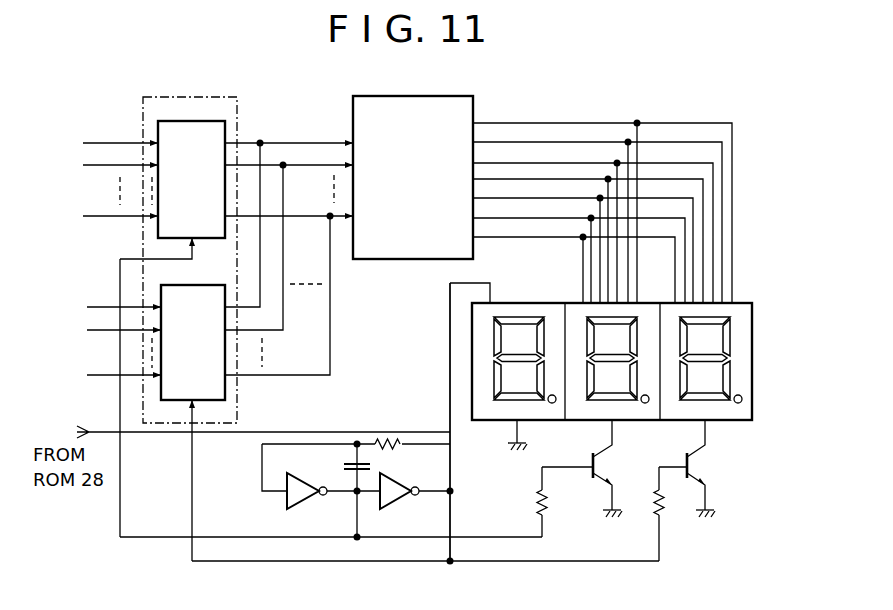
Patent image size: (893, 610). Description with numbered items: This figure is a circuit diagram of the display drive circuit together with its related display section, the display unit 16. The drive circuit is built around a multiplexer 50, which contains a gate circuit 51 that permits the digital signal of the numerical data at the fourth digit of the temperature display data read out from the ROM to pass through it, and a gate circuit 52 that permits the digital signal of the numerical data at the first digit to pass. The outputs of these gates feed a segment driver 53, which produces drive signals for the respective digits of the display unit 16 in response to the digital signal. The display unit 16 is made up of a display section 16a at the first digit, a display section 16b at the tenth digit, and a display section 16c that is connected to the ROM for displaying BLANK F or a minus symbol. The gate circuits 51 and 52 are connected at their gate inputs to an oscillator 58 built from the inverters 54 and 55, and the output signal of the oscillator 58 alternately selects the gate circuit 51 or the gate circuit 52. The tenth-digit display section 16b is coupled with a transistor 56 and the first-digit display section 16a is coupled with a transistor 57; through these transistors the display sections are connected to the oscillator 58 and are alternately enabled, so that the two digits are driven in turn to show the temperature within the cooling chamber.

The display unit 16 is at (723, 422).
The display section at the first digit 16a is at (747, 312).
The display section at the 10th digit 16b is at (635, 422).
The display section 16c is at (547, 422).
The multiplexer 50 is at (237, 118).
The gate circuit 51 is at (200, 121).
The gate circuit 52 is at (208, 285).
The segment driver 53 is at (422, 96).
The inverter 54 is at (312, 504).
The inverter 55 is at (402, 504).
The transistor 56 is at (600, 481).
The transistor 57 is at (700, 476).
The oscillator 58 is at (462, 508).